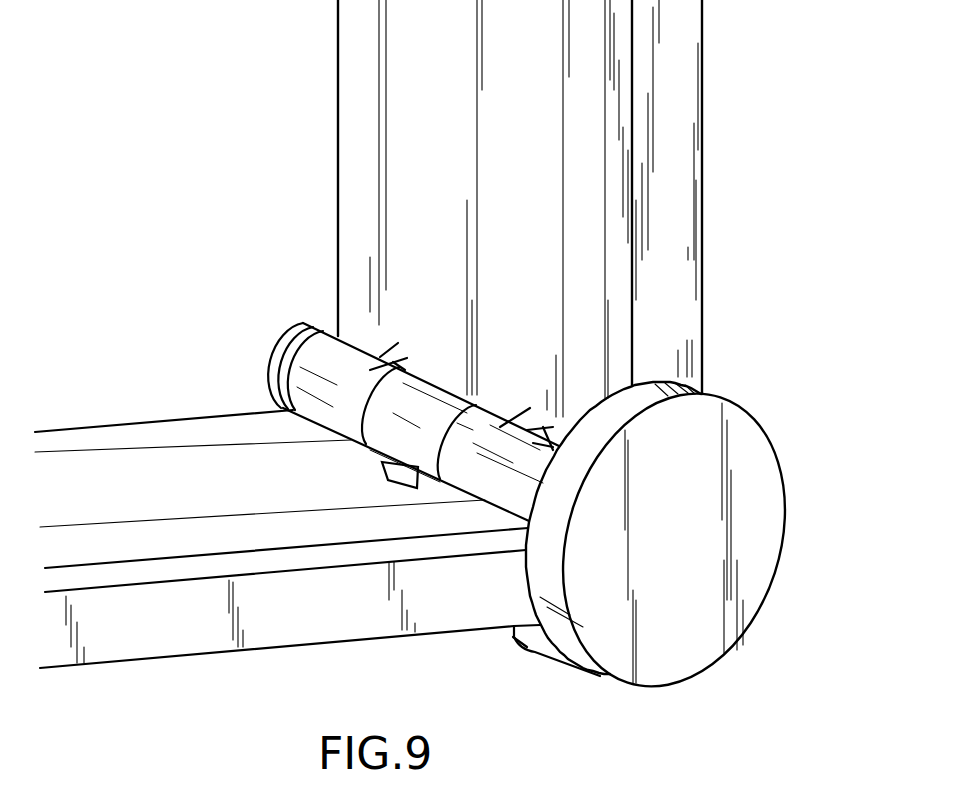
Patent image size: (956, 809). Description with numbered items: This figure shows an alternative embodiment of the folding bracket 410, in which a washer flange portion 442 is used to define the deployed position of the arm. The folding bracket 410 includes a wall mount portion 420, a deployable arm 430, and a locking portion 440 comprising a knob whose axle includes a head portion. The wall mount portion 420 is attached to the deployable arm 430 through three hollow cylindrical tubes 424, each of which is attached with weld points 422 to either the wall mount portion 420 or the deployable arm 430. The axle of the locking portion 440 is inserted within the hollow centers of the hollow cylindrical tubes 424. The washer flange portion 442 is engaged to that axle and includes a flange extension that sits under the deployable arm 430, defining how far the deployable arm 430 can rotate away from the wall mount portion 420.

The folding bracket 410 is at (692, 73).
The wall mount portion 420 is at (692, 286).
The weld points 422 is at (532, 423).
The hollow cylindrical tubes 424 is at (372, 428).
The deployable arm 430 is at (250, 634).
The locking portion 440 is at (773, 487).
The washer flange portion 442 is at (536, 654).